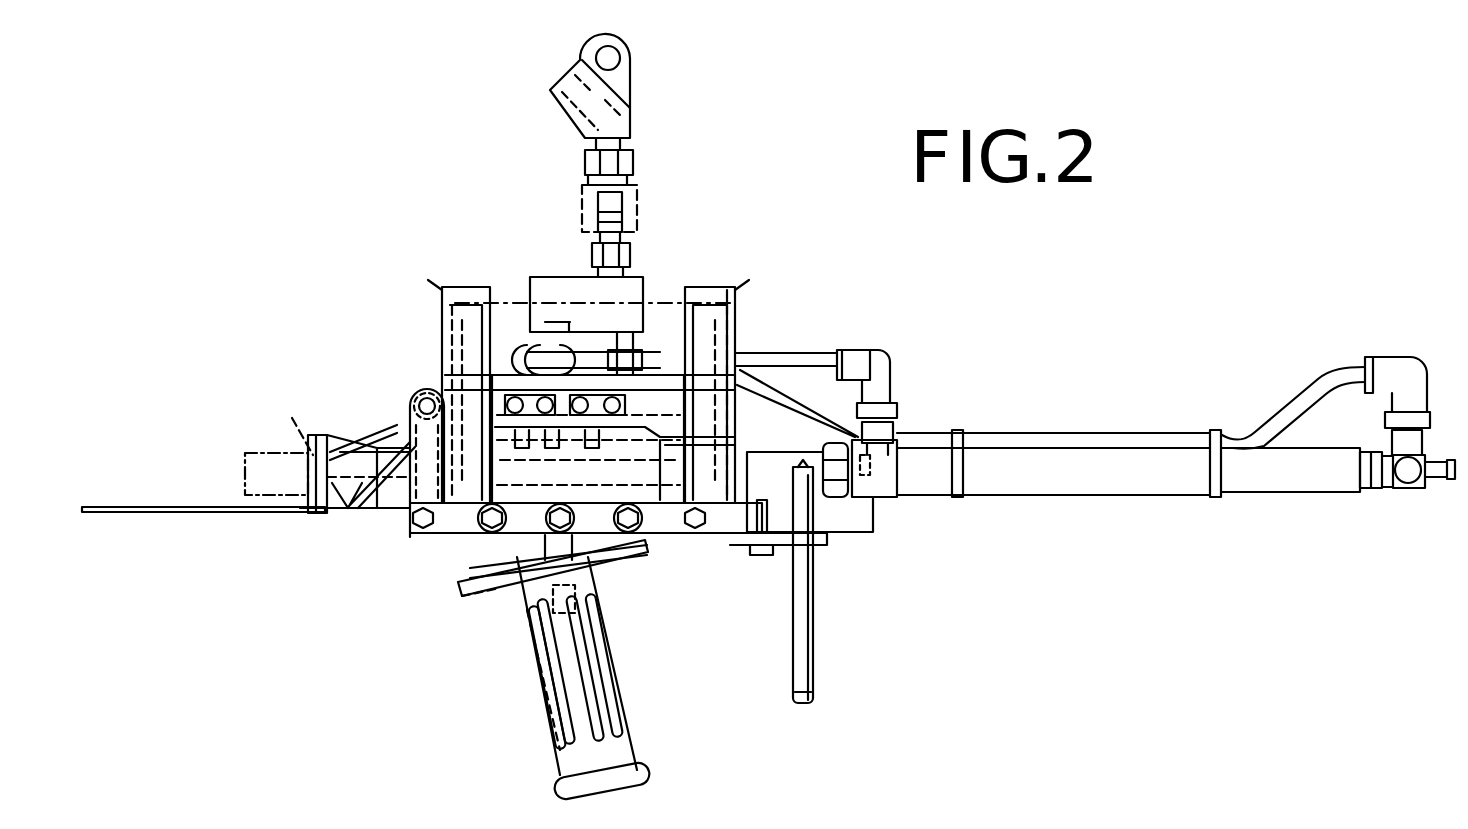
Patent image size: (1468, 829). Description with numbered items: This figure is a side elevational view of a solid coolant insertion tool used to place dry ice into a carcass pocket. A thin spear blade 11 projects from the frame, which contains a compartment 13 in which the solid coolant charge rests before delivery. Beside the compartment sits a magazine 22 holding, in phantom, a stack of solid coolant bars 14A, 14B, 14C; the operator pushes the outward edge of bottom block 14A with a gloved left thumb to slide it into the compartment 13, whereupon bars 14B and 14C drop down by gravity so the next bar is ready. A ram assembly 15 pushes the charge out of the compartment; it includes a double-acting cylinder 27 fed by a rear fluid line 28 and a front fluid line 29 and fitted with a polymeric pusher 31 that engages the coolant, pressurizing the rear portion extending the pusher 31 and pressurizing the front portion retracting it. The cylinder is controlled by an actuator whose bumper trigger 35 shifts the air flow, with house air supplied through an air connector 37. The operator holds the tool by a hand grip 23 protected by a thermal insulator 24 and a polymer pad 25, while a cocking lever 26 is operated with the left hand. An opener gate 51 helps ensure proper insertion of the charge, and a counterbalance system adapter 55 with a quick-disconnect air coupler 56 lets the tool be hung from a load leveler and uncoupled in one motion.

The spear blade 11 is at (190, 514).
The compartment 13 is at (458, 540).
The bottom solid coolant block 14A is at (683, 540).
The solid coolant bar 14B is at (445, 400).
The solid coolant bar 14C is at (455, 325).
The ram assembly 15 is at (1162, 495).
The magazine 22 is at (715, 292).
The hand grip 23 is at (628, 693).
The thermal insulator 24 is at (475, 580).
The polymer pad 25 is at (478, 600).
The cocking lever 26 is at (806, 641).
The double-acting cylinder 27 is at (1278, 485).
The rear fluid line 28 is at (1300, 390).
The front fluid line 29 is at (840, 365).
The pusher 31 is at (268, 456).
The bumper trigger 35 is at (321, 437).
The air connector 37 is at (545, 293).
The opener gate 51 is at (398, 505).
The counterbalance system adapter 55 is at (628, 78).
The quick-disconnect air coupler 56 is at (640, 190).